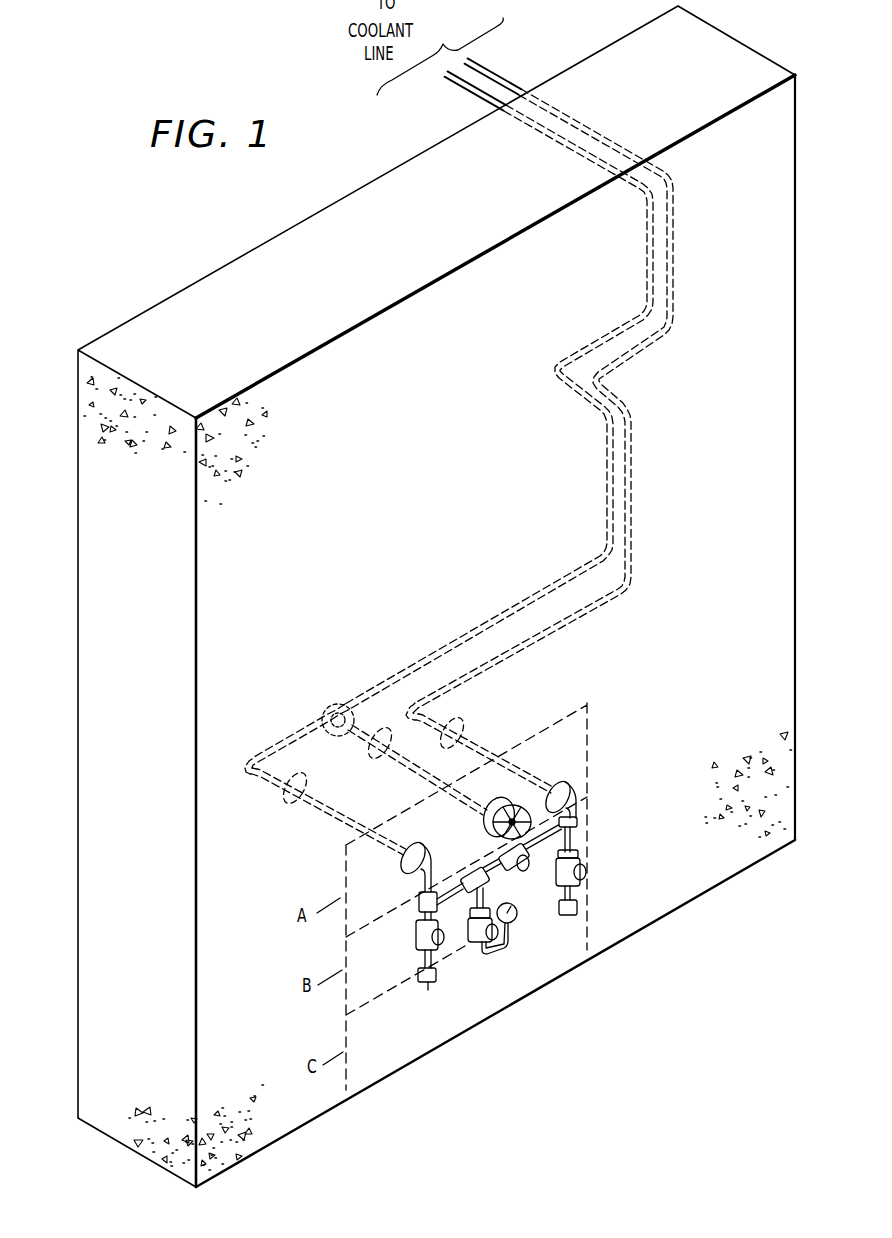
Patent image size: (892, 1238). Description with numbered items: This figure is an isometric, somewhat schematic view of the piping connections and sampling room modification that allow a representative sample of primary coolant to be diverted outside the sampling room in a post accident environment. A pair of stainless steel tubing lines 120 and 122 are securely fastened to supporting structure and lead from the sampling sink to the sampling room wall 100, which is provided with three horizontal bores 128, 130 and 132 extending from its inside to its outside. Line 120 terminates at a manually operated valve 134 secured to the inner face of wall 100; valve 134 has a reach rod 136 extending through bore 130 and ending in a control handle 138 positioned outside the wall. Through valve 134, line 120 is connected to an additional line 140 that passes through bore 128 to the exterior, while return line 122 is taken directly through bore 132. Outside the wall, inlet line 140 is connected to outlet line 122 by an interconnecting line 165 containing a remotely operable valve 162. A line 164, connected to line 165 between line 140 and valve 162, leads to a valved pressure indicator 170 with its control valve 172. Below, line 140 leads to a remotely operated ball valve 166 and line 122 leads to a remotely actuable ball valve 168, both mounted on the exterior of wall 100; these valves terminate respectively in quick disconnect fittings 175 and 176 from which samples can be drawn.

The sampling room wall 100 is at (197, 300).
The line 120 is at (500, 72).
The return line 122 is at (470, 88).
The bore 128 is at (310, 825).
The bore 130 is at (388, 775).
The bore 132 is at (490, 732).
The manually operated valve 134 is at (340, 704).
The reach rod 136 is at (483, 822).
The control handle 138 is at (500, 837).
The additional line 140 is at (249, 766).
The remotely operable valve 162 is at (511, 870).
The line 164 is at (468, 896).
The interconnecting line 165 is at (458, 890).
The remotely operated ball valve 166 is at (418, 943).
The remotely actuable ball valve 168 is at (580, 860).
The valved pressure indicator 170 is at (513, 912).
The control valve 172 is at (470, 947).
The quick disconnect fitting 175 is at (435, 986).
The quick disconnect fitting 176 is at (580, 903).